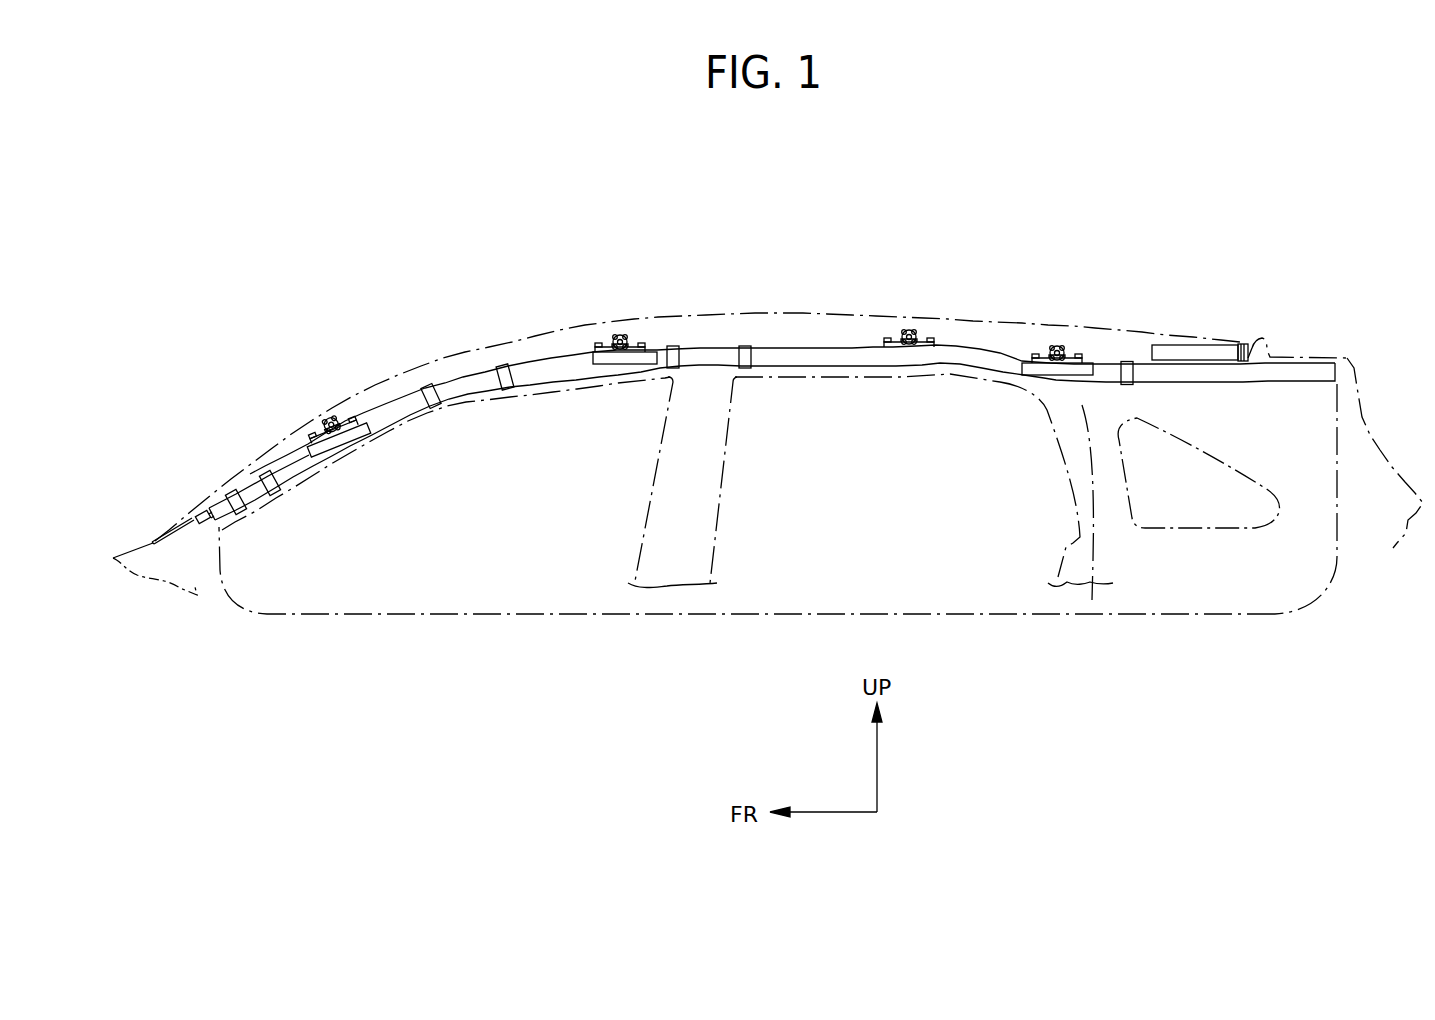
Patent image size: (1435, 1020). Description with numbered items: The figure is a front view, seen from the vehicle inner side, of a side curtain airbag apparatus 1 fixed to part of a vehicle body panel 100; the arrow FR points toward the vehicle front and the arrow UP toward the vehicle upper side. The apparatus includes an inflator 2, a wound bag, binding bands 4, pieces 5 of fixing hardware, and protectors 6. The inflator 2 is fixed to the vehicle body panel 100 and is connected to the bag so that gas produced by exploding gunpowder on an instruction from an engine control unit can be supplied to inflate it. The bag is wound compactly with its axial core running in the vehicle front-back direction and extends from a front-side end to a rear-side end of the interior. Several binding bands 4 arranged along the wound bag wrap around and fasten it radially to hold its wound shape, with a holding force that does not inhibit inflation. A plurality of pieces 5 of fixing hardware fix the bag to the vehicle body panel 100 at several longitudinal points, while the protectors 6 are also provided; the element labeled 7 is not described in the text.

The side curtain airbag apparatus 1 is at (1315, 350).
The inflator 2 is at (1209, 345).
The binding bands 4 is at (241, 512).
The pieces of fixing hardware 5 is at (330, 403).
The protectors 6 is at (338, 455).
The center pillar 7 is at (674, 565).
The vehicle body panel 100 is at (838, 313).